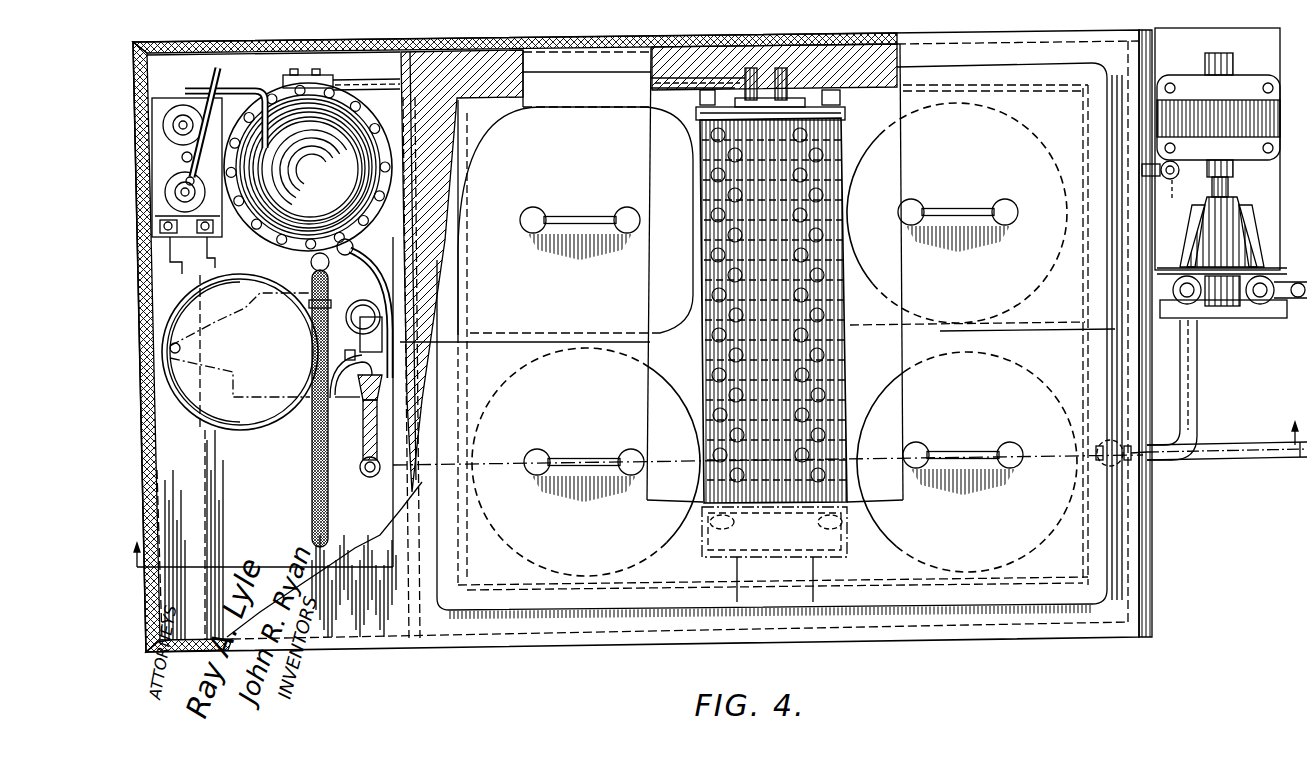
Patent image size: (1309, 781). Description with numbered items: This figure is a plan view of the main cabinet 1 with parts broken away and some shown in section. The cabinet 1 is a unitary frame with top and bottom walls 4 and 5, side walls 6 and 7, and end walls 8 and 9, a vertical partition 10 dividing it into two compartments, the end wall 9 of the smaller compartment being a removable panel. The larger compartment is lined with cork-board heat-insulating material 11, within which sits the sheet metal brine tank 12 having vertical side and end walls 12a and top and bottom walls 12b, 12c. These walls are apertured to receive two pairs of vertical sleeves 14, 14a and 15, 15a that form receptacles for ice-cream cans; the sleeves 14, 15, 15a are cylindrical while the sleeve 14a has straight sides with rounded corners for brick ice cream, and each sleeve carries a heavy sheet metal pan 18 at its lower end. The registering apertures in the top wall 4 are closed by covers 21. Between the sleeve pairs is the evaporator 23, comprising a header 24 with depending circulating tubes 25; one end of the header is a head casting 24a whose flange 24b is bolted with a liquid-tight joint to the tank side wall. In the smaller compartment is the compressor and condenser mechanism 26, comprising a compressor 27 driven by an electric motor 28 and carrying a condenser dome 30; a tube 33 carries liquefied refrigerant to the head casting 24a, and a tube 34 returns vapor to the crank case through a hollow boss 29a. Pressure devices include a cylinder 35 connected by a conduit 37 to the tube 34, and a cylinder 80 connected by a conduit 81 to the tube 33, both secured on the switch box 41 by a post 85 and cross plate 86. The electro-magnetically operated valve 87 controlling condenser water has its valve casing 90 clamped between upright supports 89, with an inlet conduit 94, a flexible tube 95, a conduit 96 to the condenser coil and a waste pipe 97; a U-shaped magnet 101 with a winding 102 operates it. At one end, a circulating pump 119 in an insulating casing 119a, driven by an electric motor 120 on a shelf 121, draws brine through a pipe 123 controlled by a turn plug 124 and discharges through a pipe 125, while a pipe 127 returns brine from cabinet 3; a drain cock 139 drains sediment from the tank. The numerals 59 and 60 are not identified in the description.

The main cabinet 1 is at (982, 642).
The cabinet 3 is at (716, 483).
The top wall 4 is at (393, 625).
The bottom wall 5 is at (215, 590).
The side wall 6 is at (449, 53).
The side wall 7 is at (236, 645).
The end wall 8 is at (1150, 555).
The end wall 9 is at (157, 478).
The vertical partition 10 is at (354, 243).
The heat-insulating material 11 is at (823, 48).
The brine tank 12 is at (530, 585).
The side and end walls 12a is at (488, 97).
The top wall 12b is at (1082, 625).
The bottom wall 12c is at (470, 123).
The vertical sleeve 14 is at (662, 392).
The vertical sleeve 14a is at (648, 333).
The vertical sleeve 15 is at (886, 383).
The vertical sleeve 15a is at (878, 295).
The sheet metal pan 18 is at (478, 168).
The cover 21 is at (590, 72).
The evaporator 23 is at (838, 150).
The header 24 is at (847, 342).
The head casting 24a is at (838, 100).
The flange 24b is at (845, 95).
The circulating tubes 25 is at (700, 262).
The compressor and condenser mechanism 26 is at (338, 80).
The compressor 27 is at (386, 79).
The electric motor 28 is at (245, 432).
The hollow boss 29a is at (312, 73).
The condenser dome 30 is at (308, 135).
The tube 33 is at (197, 46).
The tube 34 is at (362, 90).
The cylinder 35 is at (282, 181).
The conduit 37 is at (285, 136).
The switch box 41 is at (278, 166).
The inner ring 59 is at (301, 215).
The inner ring 60 is at (288, 201).
The cylinder 80 is at (183, 108).
The conduit 81 is at (218, 66).
The post 85 is at (225, 152).
The cross plate 86 is at (180, 262).
The electro-magnetically operated valve 87 is at (338, 367).
The upright supports 89 is at (342, 340).
The valve casing 90 is at (433, 350).
The conduit 94 is at (356, 465).
The flexible tube 95 is at (371, 478).
The conduit 96 is at (387, 300).
The pipe 97 is at (312, 468).
The magnet 101 is at (440, 333).
The winding 102 is at (358, 306).
The circulating pump 119 is at (1225, 318).
The casing 119a is at (1285, 318).
The electric motor 120 is at (1248, 165).
The shelf 121 is at (1242, 322).
The pipe 123 is at (1198, 402).
The turn plug 124 is at (1125, 462).
The pipe 125 is at (1295, 330).
The pipe 127 is at (1255, 462).
The drain cock 139 is at (1172, 186).